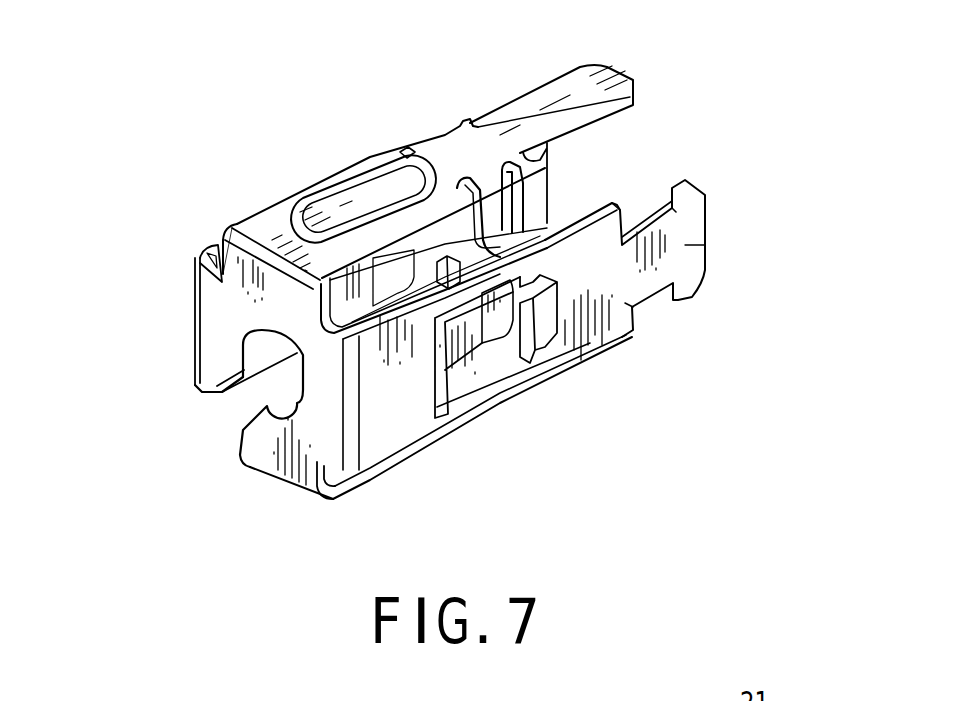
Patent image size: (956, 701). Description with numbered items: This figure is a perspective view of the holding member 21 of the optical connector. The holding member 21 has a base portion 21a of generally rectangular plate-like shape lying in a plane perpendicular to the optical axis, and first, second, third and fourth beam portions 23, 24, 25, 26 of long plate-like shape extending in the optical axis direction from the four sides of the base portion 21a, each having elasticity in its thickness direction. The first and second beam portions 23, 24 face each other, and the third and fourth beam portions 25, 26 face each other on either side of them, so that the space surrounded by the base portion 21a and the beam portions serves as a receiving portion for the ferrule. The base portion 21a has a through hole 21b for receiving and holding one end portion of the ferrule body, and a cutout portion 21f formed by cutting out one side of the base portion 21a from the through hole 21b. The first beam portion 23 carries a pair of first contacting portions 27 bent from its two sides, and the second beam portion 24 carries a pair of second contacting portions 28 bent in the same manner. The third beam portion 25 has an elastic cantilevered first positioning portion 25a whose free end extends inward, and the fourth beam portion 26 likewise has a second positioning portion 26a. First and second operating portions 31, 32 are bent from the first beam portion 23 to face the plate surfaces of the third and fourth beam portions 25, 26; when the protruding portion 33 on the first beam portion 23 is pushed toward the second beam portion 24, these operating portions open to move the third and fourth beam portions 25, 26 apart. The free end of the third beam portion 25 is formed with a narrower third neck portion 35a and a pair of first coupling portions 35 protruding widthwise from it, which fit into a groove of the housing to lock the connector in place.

The holding member 21 is at (201, 199).
The base portion 21a is at (223, 305).
The through hole 21b is at (242, 352).
The cutout portion 21f is at (233, 393).
The first beam portion 23 is at (560, 97).
The second beam portion 24 is at (395, 472).
The third beam portion 25 is at (589, 333).
The first positioning portion 25a is at (453, 383).
The fourth beam portion 26 is at (200, 247).
The second positioning portion 26a is at (316, 275).
The first contacting portions 27 is at (560, 200).
The second contacting portions 28 is at (445, 260).
The first operating portion 31 is at (500, 205).
The second operating portion 32 is at (403, 150).
The protruding portion 33 is at (328, 203).
The first coupling portions 35 is at (680, 290).
The third neck portion 35a is at (700, 248).